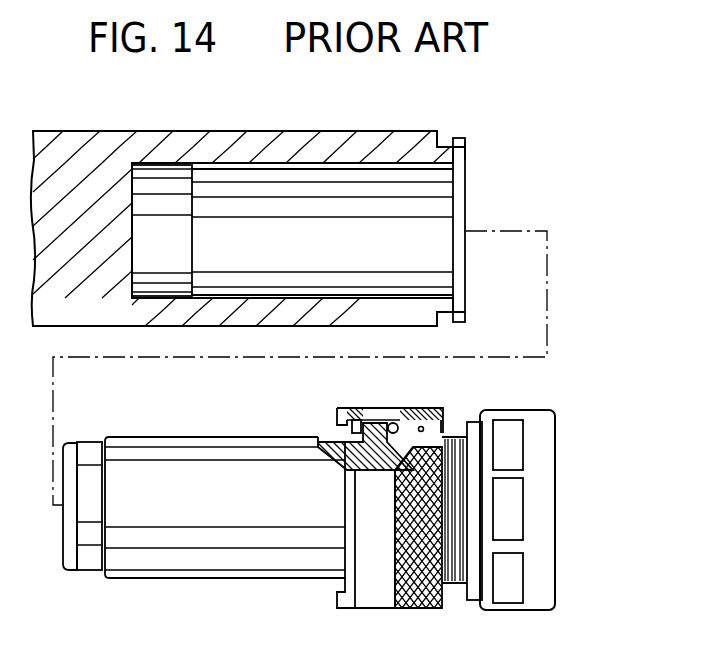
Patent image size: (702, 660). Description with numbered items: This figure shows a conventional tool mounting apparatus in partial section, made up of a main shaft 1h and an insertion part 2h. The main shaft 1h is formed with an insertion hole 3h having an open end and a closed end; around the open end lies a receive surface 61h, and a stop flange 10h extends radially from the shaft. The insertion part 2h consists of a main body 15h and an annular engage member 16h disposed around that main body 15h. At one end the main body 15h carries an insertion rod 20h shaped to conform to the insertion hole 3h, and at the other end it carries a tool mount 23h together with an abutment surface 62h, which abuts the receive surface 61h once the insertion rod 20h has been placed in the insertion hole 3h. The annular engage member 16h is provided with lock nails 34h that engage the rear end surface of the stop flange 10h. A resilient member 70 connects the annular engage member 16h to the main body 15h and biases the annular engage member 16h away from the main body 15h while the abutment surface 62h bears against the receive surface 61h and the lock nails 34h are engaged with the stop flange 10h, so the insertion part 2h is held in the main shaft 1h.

The main shaft 1h is at (240, 131).
The insertion hole 3h is at (446, 203).
The stop flange 10h is at (456, 138).
The receive surface 61h is at (470, 151).
The insertion part 2h is at (372, 506).
The insertion rod 20h is at (195, 437).
The main body 15h is at (358, 470).
The lock nails 34h is at (347, 408).
The abutment surface 62h is at (342, 433).
The annular engage member 16h is at (381, 414).
The resilient member 70 is at (398, 424).
The tool mount 23h is at (560, 432).